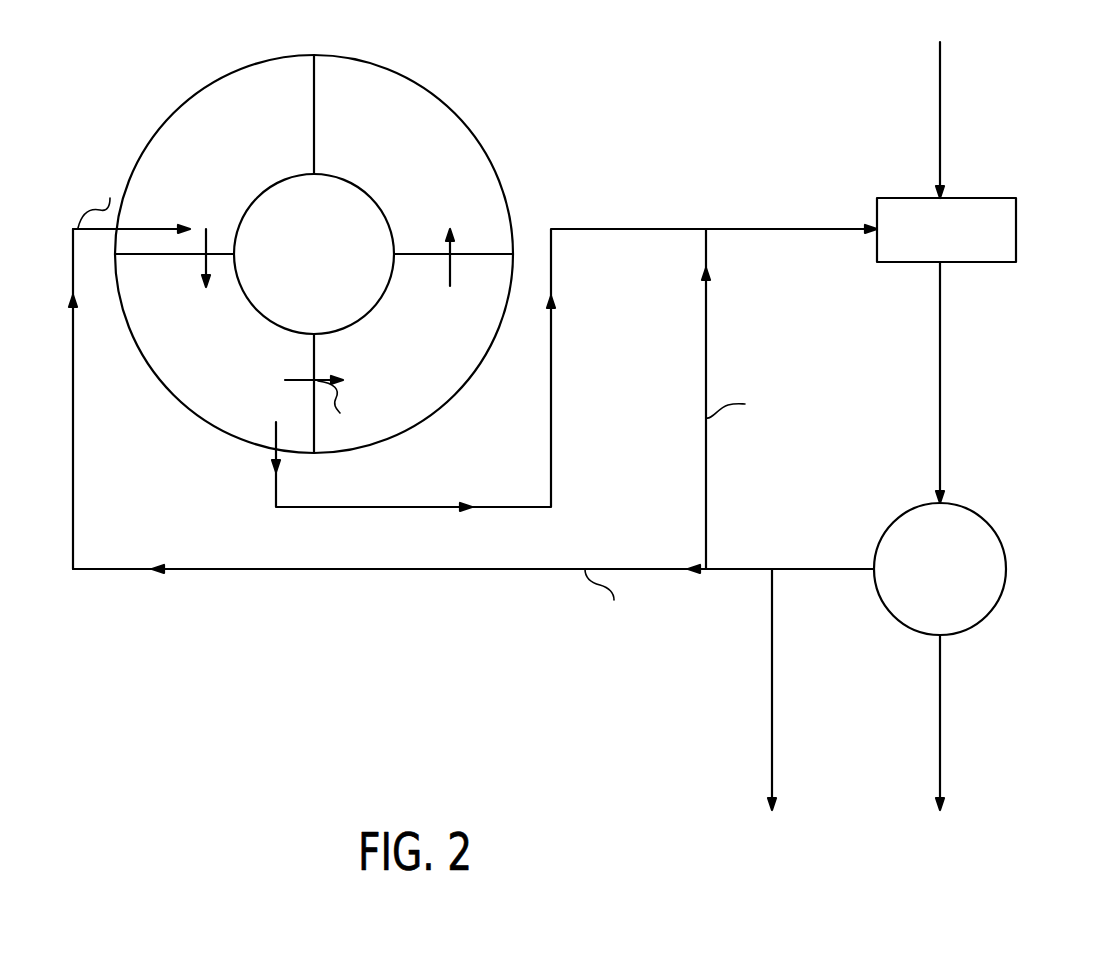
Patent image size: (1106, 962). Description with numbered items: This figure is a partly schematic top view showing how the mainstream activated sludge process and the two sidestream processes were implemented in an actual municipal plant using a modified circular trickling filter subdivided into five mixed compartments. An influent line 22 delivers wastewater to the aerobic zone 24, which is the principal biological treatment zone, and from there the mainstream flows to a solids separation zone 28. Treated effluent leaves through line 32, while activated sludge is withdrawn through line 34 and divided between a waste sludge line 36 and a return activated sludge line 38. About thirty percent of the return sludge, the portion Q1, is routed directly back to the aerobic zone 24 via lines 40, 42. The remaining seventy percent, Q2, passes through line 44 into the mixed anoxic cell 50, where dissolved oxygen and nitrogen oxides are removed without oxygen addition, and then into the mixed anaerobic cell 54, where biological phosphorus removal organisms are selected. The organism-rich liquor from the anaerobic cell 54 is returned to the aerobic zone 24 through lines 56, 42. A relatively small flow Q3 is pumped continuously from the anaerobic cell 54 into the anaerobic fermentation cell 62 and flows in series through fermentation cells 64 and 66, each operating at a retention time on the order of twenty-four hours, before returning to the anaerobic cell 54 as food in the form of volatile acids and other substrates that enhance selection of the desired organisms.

The influent line 22 is at (940, 90).
The aerobic zone 24 is at (980, 262).
The solids separation zone 28 is at (1006, 556).
The treated effluent line 32 is at (940, 782).
The sludge withdrawal line 34 is at (828, 569).
The waste sludge line 36 is at (772, 760).
The return activated sludge line 38 is at (722, 569).
The return sludge line 40 is at (706, 483).
The aerobic zone feed line 42 is at (823, 229).
The sidestream sludge line 44 is at (630, 569).
The anoxic zone 50 is at (238, 168).
The anaerobic zone 54 is at (286, 290).
The liquor transfer line 56 is at (551, 418).
The anaerobic fermentation cell 62 is at (424, 368).
The anaerobic fermentation cell 64 is at (352, 221).
The anaerobic fermentation cell 66 is at (328, 267).